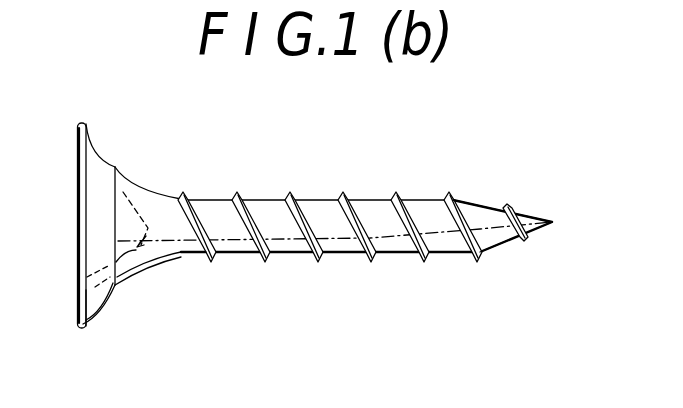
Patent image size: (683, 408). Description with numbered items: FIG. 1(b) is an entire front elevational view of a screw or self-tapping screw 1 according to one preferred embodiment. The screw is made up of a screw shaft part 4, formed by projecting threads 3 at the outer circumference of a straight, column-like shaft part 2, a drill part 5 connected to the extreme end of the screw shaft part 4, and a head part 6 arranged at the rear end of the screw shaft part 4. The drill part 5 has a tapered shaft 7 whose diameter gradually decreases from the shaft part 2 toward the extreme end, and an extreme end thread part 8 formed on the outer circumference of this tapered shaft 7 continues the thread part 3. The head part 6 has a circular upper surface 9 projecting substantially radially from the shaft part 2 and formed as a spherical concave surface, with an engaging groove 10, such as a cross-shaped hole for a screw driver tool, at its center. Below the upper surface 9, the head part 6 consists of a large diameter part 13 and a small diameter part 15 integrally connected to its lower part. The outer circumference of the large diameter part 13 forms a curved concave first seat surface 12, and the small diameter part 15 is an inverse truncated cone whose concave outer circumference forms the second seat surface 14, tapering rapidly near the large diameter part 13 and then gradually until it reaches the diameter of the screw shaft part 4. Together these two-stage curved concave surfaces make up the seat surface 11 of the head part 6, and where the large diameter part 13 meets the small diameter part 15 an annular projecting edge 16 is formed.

The screw 1 is at (345, 178).
The shaft part 2 is at (339, 257).
The threads 3 is at (420, 258).
The screw shaft part 4 is at (265, 192).
The drill part 5 is at (486, 202).
The head part 6 is at (74, 246).
The tapered shaft 7 is at (493, 243).
The extreme end thread part 8 is at (527, 237).
The upper surface 9 is at (85, 285).
The engaging groove 10 is at (104, 187).
The seat surface 11 is at (160, 270).
The first seat surface 12 is at (102, 301).
The large diameter part 13 is at (100, 163).
The second seat surface 14 is at (188, 262).
The small diameter part 15 is at (157, 200).
The annular projecting edge 16 is at (128, 260).